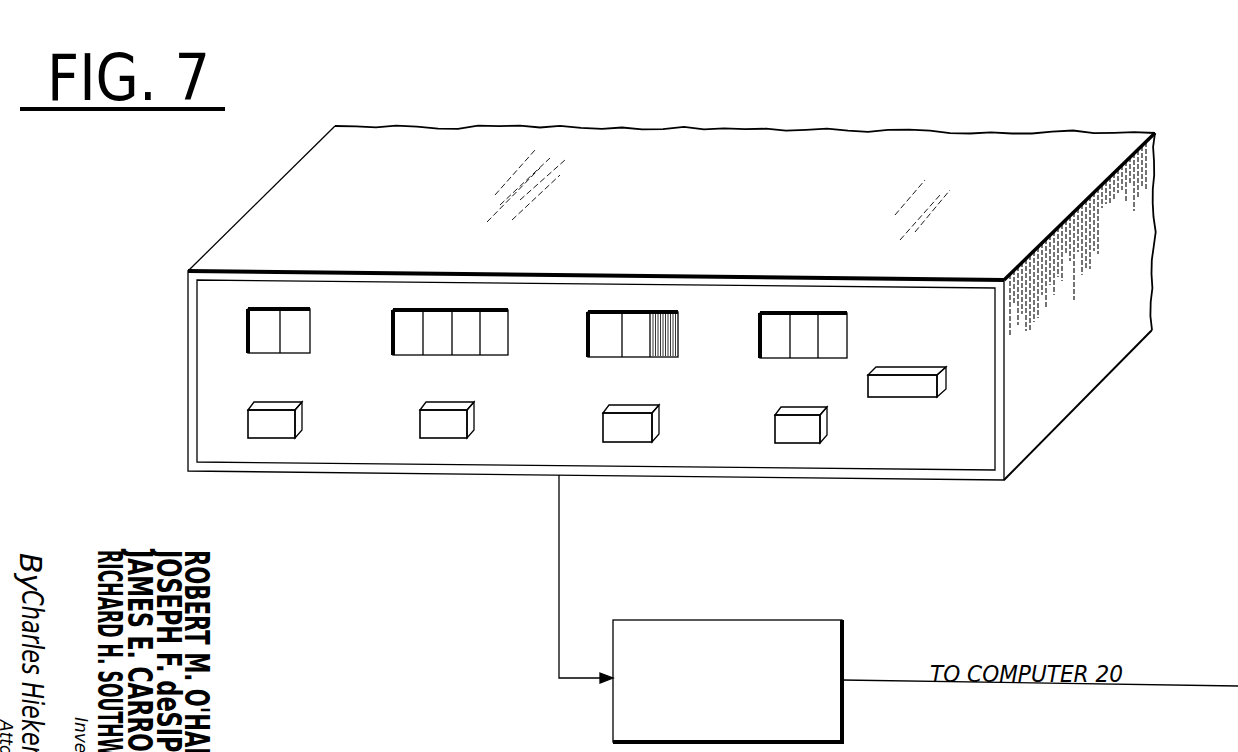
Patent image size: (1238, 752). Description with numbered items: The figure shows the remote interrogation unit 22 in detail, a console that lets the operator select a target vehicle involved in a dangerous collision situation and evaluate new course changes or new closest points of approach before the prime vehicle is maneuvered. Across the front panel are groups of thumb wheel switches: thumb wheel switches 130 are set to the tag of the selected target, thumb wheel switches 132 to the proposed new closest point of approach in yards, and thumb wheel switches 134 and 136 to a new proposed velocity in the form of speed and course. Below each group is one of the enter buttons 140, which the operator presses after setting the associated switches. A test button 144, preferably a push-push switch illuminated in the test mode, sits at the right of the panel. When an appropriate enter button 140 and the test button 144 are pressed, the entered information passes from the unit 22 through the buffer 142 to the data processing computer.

The remote interrogation unit 22 is at (665, 145).
The thumb wheel switches 130 is at (310, 323).
The thumb wheel switches 132 is at (508, 324).
The thumb wheel switches 134 is at (678, 326).
The thumb wheel switches 136 is at (847, 327).
The enter buttons 140 is at (296, 429).
The buffer 142 is at (728, 620).
The test button 144 is at (910, 397).